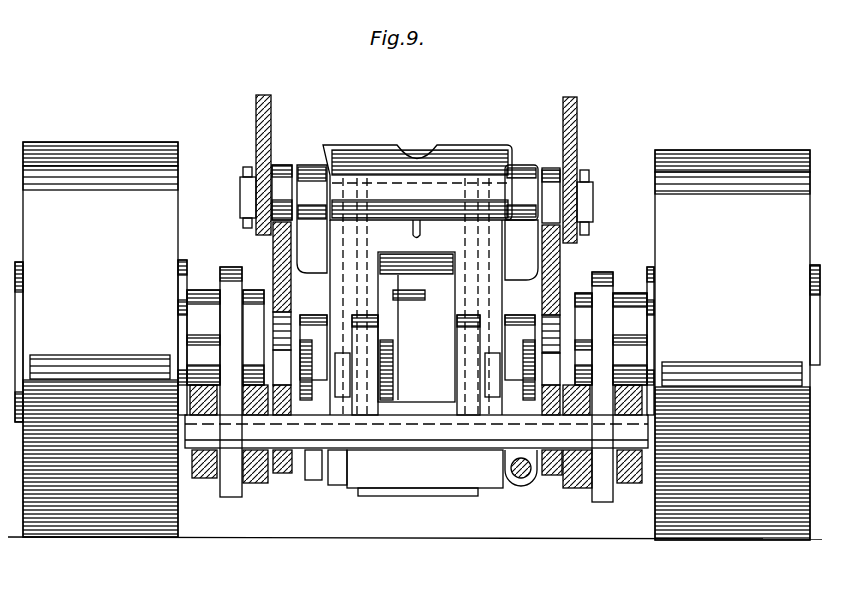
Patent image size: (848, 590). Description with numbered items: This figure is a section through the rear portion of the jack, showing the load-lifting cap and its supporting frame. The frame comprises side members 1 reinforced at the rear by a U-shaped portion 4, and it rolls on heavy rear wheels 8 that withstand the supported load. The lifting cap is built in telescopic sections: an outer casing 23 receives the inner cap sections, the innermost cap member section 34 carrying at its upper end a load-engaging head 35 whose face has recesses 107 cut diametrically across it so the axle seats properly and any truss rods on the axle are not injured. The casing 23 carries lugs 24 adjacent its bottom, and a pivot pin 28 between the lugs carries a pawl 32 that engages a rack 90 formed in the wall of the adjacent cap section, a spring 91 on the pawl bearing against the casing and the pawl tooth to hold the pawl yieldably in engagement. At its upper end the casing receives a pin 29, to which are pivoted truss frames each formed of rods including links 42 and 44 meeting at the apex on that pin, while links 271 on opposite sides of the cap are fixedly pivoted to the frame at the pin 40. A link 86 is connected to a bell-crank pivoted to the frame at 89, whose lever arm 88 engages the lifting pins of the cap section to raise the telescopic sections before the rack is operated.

The rear wheel 8 is at (88, 530).
The truss frame link 44 is at (258, 103).
The truss frame link 42 is at (274, 245).
The load-engaging head 35 is at (352, 145).
The recess 107 is at (407, 157).
The rack 90 is at (388, 262).
The pin 29 is at (445, 183).
The lug 24 is at (380, 372).
The spring 91 is at (392, 358).
The cap member section 34 is at (437, 277).
The pawl 32 is at (498, 262).
The casing 23 is at (590, 210).
The side member 1 is at (203, 478).
The U-shaped portion 4 is at (253, 483).
The link 271 is at (283, 473).
The lever arm 88 is at (313, 480).
The pivot pin 28 is at (347, 460).
The link 86 is at (523, 478).
The pivot 89 is at (568, 290).
The pin 40 is at (606, 482).